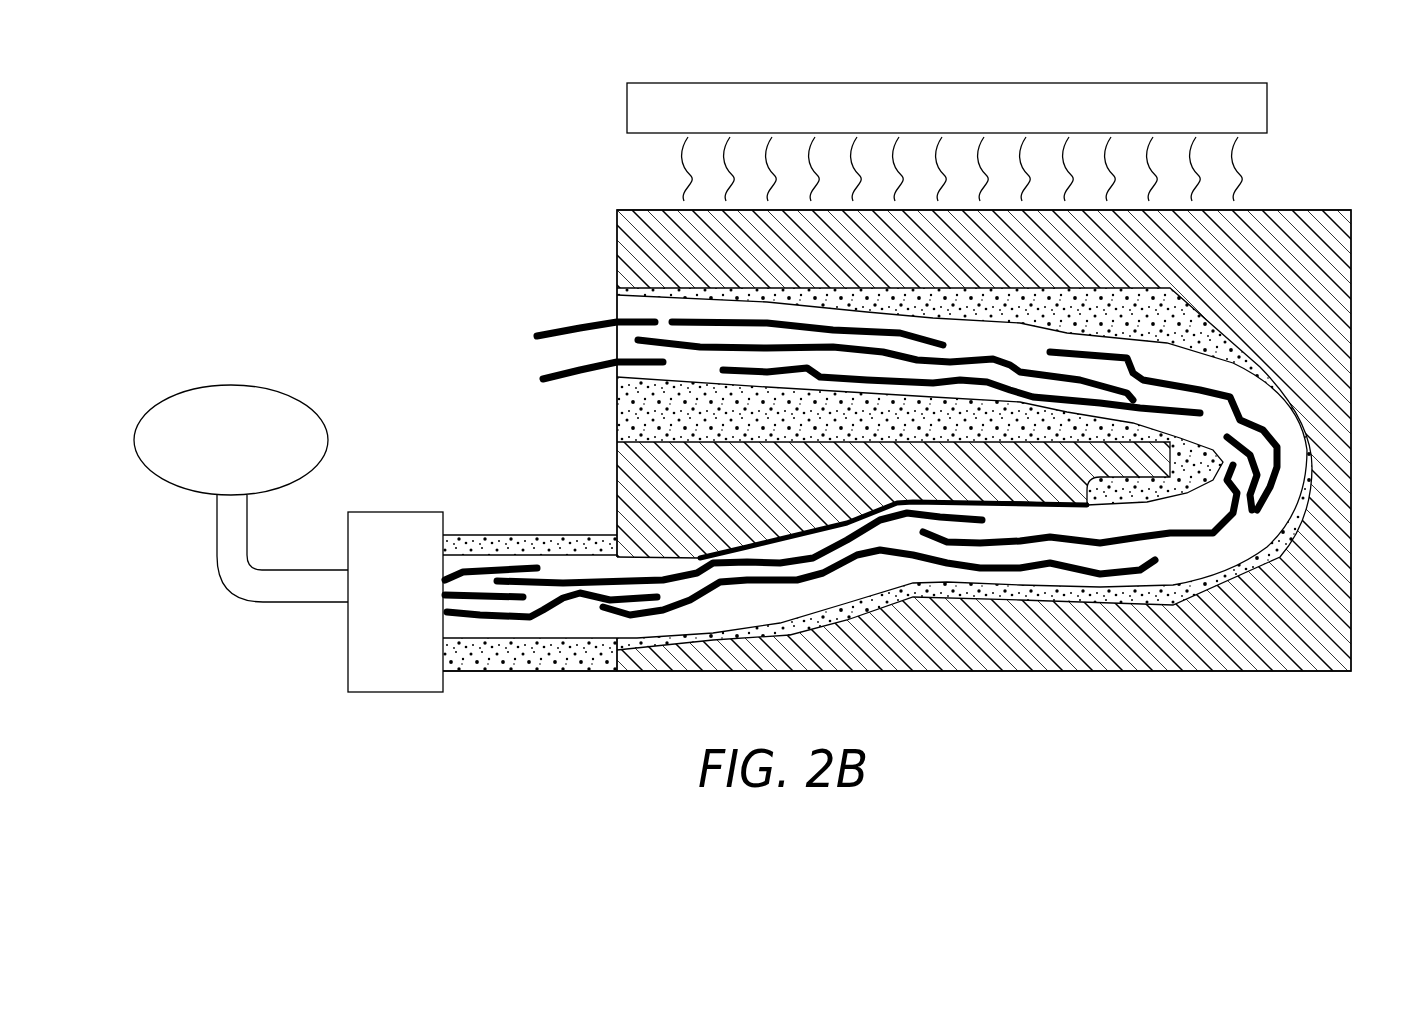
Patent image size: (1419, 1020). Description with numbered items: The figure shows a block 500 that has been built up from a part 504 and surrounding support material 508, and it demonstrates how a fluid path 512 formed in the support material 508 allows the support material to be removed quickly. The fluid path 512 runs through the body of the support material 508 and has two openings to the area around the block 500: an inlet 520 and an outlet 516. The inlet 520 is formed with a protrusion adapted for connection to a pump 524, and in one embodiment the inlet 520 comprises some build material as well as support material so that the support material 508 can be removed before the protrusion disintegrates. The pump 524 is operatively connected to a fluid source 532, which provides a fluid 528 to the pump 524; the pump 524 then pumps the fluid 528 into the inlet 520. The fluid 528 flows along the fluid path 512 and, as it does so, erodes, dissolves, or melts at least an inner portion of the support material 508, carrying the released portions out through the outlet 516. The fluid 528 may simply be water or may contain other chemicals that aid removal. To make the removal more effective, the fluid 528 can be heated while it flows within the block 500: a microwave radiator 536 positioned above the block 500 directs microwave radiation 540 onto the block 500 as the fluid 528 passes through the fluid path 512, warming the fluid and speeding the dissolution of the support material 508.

The block 500 is at (1308, 183).
The part 504 is at (1220, 671).
The support material 508 is at (653, 420).
The fluid path 512 is at (803, 290).
The outlet 516 is at (638, 313).
The inlet 520 is at (460, 617).
The pump 524 is at (348, 663).
The fluid 528 is at (667, 597).
The fluid source 532 is at (328, 432).
The microwave radiator 536 is at (627, 110).
The microwave radiation 540 is at (664, 167).